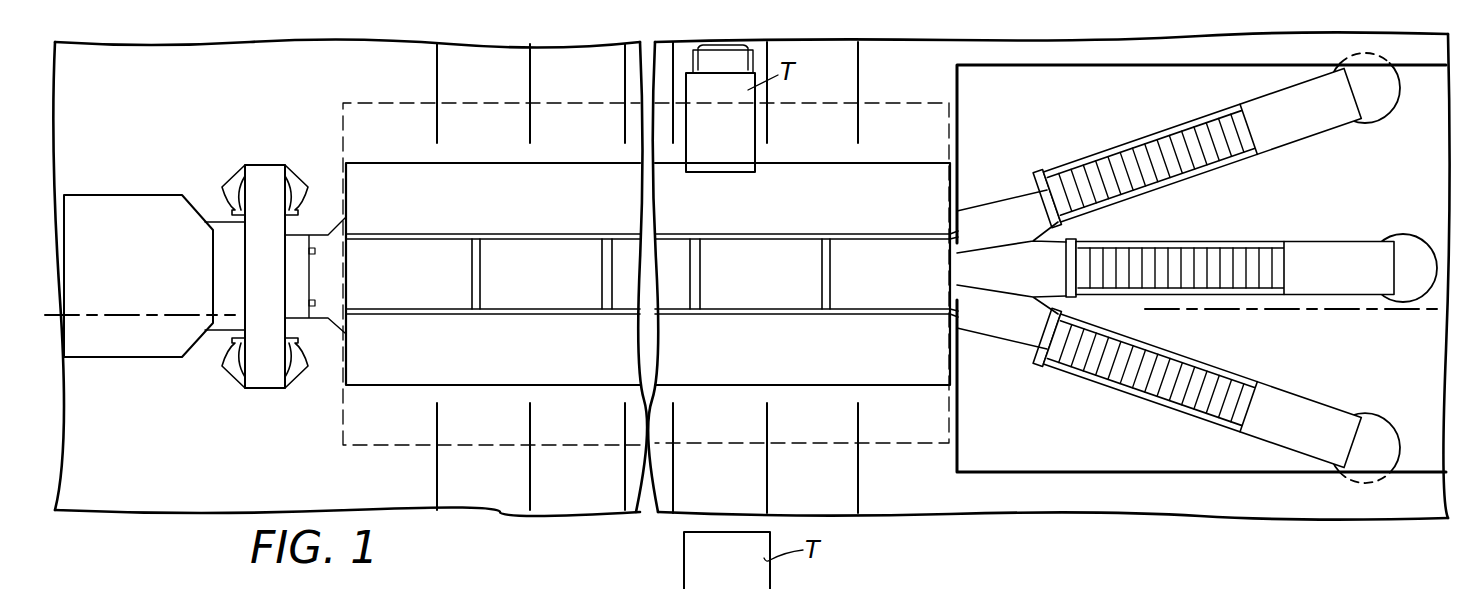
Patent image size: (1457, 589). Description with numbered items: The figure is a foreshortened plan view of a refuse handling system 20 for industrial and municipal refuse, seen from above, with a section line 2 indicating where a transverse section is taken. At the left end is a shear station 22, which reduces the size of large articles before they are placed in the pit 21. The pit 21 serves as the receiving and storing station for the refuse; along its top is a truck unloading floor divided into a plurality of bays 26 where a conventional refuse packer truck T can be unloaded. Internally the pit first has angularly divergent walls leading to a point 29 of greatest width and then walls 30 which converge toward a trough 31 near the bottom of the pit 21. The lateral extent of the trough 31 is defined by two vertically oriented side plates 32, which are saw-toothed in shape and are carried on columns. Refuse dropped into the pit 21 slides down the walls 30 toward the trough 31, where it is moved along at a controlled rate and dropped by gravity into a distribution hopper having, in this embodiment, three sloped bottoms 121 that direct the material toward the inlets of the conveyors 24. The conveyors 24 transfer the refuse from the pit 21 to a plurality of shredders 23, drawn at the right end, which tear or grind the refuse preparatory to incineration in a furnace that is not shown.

The section line 2- 2 is at (50, 360).
The refuse handling system 20 is at (523, 494).
The pit 21 is at (776, 161).
The shear station 22 is at (218, 183).
The shredders 23 is at (1393, 130).
The conveyors 24 is at (1272, 156).
The bays 26 is at (592, 87).
The point of greatest width 29 is at (880, 103).
The walls 30 is at (648, 256).
The trough 31 is at (737, 228).
The side plates 32 is at (836, 235).
The sloped bottoms 121 is at (1017, 237).